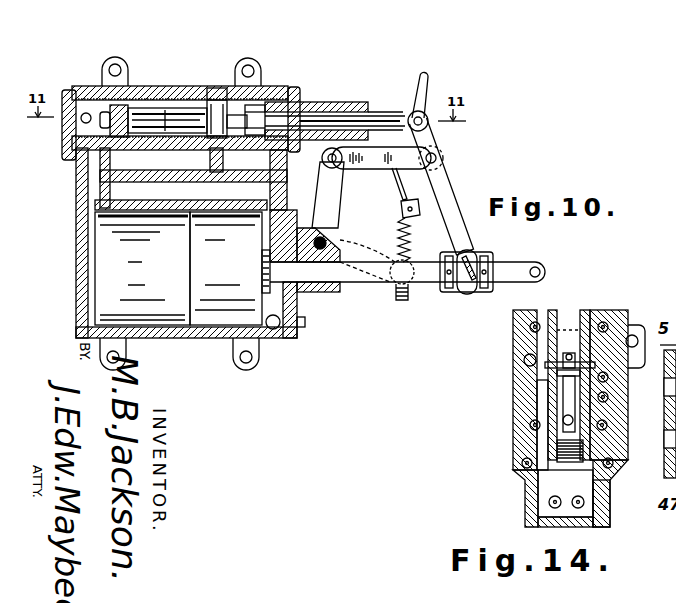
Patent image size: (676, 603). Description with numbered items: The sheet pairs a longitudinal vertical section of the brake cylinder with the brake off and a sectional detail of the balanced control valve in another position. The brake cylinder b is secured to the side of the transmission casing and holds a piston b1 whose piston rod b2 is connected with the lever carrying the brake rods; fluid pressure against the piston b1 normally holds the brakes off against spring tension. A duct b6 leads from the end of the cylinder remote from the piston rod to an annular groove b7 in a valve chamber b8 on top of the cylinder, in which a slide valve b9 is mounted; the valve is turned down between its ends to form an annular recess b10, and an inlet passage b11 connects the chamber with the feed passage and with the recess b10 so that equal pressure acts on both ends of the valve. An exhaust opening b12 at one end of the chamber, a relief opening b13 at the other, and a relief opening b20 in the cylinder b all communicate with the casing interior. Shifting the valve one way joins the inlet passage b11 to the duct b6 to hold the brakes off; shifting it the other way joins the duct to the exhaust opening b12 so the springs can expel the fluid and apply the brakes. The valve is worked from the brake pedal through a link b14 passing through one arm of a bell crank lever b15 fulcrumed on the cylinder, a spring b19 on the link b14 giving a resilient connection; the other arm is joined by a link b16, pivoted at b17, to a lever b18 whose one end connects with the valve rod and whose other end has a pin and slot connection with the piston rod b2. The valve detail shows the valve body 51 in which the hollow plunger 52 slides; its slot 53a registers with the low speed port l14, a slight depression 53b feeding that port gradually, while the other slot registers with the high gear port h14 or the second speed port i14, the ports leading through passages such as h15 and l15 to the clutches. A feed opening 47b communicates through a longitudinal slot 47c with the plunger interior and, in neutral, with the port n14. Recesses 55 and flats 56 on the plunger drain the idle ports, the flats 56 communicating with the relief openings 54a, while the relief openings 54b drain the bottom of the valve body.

In FIG. 10, the brake cylinder b is at (177, 333).
In FIG. 10, the piston b1 is at (218, 313).
In FIG. 10, the piston rod b2 is at (307, 277).
In FIG. 10, the duct b6 is at (80, 188).
In FIG. 10, the annular groove b7 is at (214, 88).
In FIG. 10, the valve chamber b8 is at (86, 112).
In FIG. 10, the slide valve b9 is at (120, 105).
In FIG. 10, the annular recess b10 is at (155, 108).
In FIG. 10, the inlet passage b11 is at (172, 110).
In FIG. 10, the exhaust opening b12 is at (262, 105).
In FIG. 10, the relief opening b13 is at (100, 112).
In FIG. 10, the link b14 is at (428, 83).
In FIG. 10, the bell crank lever b15 is at (333, 187).
In FIG. 10, the link b16 is at (393, 166).
In FIG. 10, the pivotal connection b17 is at (437, 160).
In FIG. 10, the lever b18 is at (445, 200).
In FIG. 10, the spring b19 is at (400, 223).
In FIG. 10, the relief opening b20 is at (297, 333).
In FIG. 14, the port n14 is at (568, 350).
In FIG. 14, the recesses 55 is at (593, 307).
In FIG. 14, the slot 53a is at (527, 350).
In FIG. 14, the depression 53b is at (540, 387).
In FIG. 14, the port l14 is at (547, 366).
In FIG. 14, the passage l15 is at (558, 372).
In FIG. 14, the longitudinal slot 47c is at (556, 395).
In FIG. 14, the valve body 51 is at (560, 429).
In FIG. 14, the feed opening 47b is at (528, 450).
In FIG. 14, the hollow plunger 52 is at (547, 480).
In FIG. 14, the port i14 is at (630, 367).
In FIG. 14, the port h14 is at (610, 390).
In FIG. 14, the passage h15 is at (610, 427).
In FIG. 14, the relief openings 54a is at (618, 400).
In FIG. 14, the flats 56 is at (616, 470).
In FIG. 14, the relief openings 54b is at (582, 508).